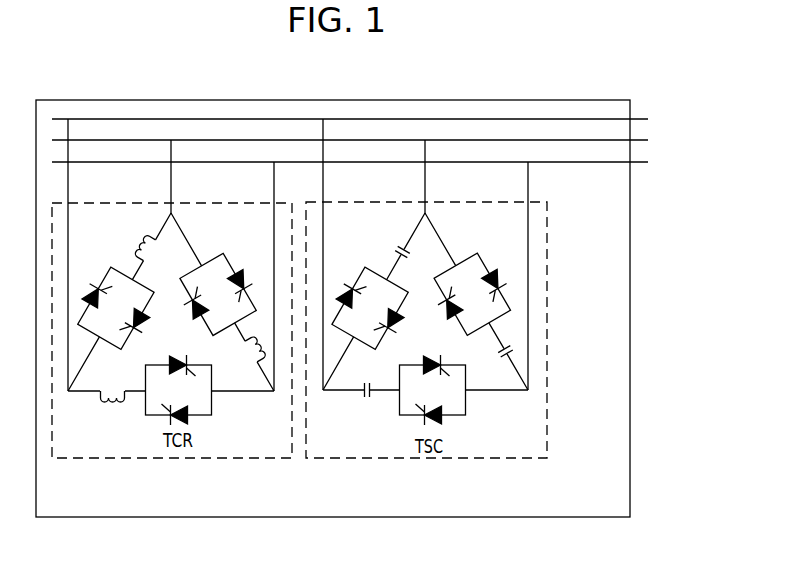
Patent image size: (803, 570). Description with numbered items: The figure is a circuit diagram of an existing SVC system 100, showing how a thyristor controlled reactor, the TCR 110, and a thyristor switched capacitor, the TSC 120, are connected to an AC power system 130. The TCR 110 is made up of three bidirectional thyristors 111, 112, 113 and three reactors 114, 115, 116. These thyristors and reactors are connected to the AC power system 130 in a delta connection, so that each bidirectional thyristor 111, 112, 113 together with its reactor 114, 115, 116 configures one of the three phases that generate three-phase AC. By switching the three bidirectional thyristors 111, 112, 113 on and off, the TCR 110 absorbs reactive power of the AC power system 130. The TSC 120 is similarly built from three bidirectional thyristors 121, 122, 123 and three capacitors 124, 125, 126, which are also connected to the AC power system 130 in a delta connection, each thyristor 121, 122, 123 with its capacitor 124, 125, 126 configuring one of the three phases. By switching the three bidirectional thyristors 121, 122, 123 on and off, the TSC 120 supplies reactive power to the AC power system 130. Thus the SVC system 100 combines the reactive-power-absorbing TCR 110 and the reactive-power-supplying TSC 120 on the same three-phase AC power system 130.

The SVC system 100 is at (237, 100).
The TCR 110 is at (130, 460).
The bidirectional thyristor 111 is at (84, 287).
The bidirectional thyristor 112 is at (212, 256).
The bidirectional thyristor 113 is at (213, 412).
The reactor 114 is at (136, 250).
The reactor 115 is at (258, 360).
The reactor 116 is at (113, 403).
The TSC 120 is at (483, 460).
The bidirectional thyristor 121 is at (355, 290).
The bidirectional thyristor 122 is at (463, 262).
The bidirectional thyristor 123 is at (399, 412).
The capacitor 124 is at (398, 250).
The capacitor 125 is at (514, 350).
The capacitor 126 is at (365, 395).
The AC power system 130 is at (692, 120).